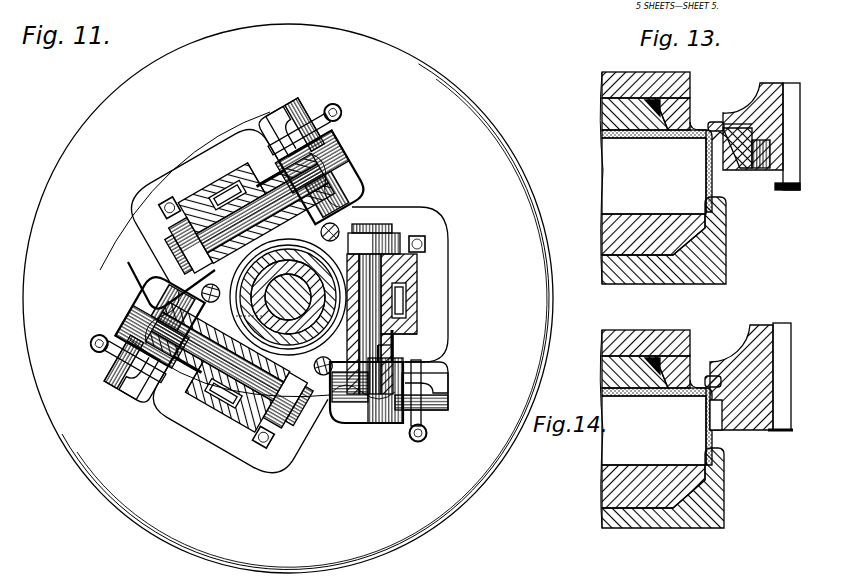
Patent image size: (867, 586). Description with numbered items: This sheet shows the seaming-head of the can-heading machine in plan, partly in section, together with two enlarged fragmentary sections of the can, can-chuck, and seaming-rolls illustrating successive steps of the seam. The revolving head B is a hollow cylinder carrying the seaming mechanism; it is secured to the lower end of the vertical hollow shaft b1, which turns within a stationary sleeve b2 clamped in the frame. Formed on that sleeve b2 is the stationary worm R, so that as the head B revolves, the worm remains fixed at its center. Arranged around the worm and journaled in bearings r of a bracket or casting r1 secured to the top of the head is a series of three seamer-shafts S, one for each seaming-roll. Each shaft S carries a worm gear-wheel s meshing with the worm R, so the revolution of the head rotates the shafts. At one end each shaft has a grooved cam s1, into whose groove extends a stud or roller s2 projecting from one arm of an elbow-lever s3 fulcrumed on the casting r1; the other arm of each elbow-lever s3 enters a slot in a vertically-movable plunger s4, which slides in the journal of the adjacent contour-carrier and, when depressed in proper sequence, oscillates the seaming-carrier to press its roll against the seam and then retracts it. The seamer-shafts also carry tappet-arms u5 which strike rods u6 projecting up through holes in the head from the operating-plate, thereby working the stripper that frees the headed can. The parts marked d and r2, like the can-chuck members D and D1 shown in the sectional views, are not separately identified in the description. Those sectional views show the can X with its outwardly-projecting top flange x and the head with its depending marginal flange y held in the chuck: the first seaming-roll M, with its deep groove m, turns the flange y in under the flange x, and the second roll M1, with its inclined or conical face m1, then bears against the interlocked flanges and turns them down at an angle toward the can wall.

In FIG. 11, the revolving head B is at (288, 298).
In FIG. 11, the vertical hollow shaft b1 is at (332, 277).
In FIG. 11, the stationary sleeve b2 is at (396, 292).
In FIG. 11, the plate d is at (171, 277).
In FIG. 11, the stationary worm R is at (416, 335).
In FIG. 11, the bearings r is at (427, 245).
In FIG. 11, the bracket or casting r1 is at (382, 353).
In FIG. 11, the slot r2 is at (403, 300).
In FIG. 11, the worm gear-wheel s is at (408, 311).
In FIG. 11, the seamer-shafts S is at (215, 287).
In FIG. 11, the grooved cam s1 is at (413, 355).
In FIG. 11, the stud or roller s2 is at (395, 425).
In FIG. 11, the elbow-lever s3 is at (449, 402).
In FIG. 11, the vertically-movable plunger s4 is at (418, 441).
In FIG. 11, the tappet-arms u5 is at (398, 246).
In FIG. 11, the rods u6 is at (378, 229).
In FIG. 13, the drum wall D is at (678, 140).
In FIG. 14, the drum wall D is at (676, 340).
In FIG. 13, the drum lower wall D1 is at (728, 252).
In FIG. 14, the drum lower wall D1 is at (728, 508).
In FIG. 13, the can X is at (654, 176).
In FIG. 14, the can X is at (654, 430).
In FIG. 13, the seaming-roll M is at (776, 82).
In FIG. 14, the second seaming-roll M1 is at (762, 322).
In FIG. 13, the deep groove m is at (738, 120).
In FIG. 14, the inclined or conical face m1 is at (746, 404).
In FIG. 13, the top flange x is at (714, 122).
In FIG. 14, the top flange x is at (710, 376).
In FIG. 13, the depending marginal flange y is at (726, 140).
In FIG. 14, the depending marginal flange y is at (712, 390).